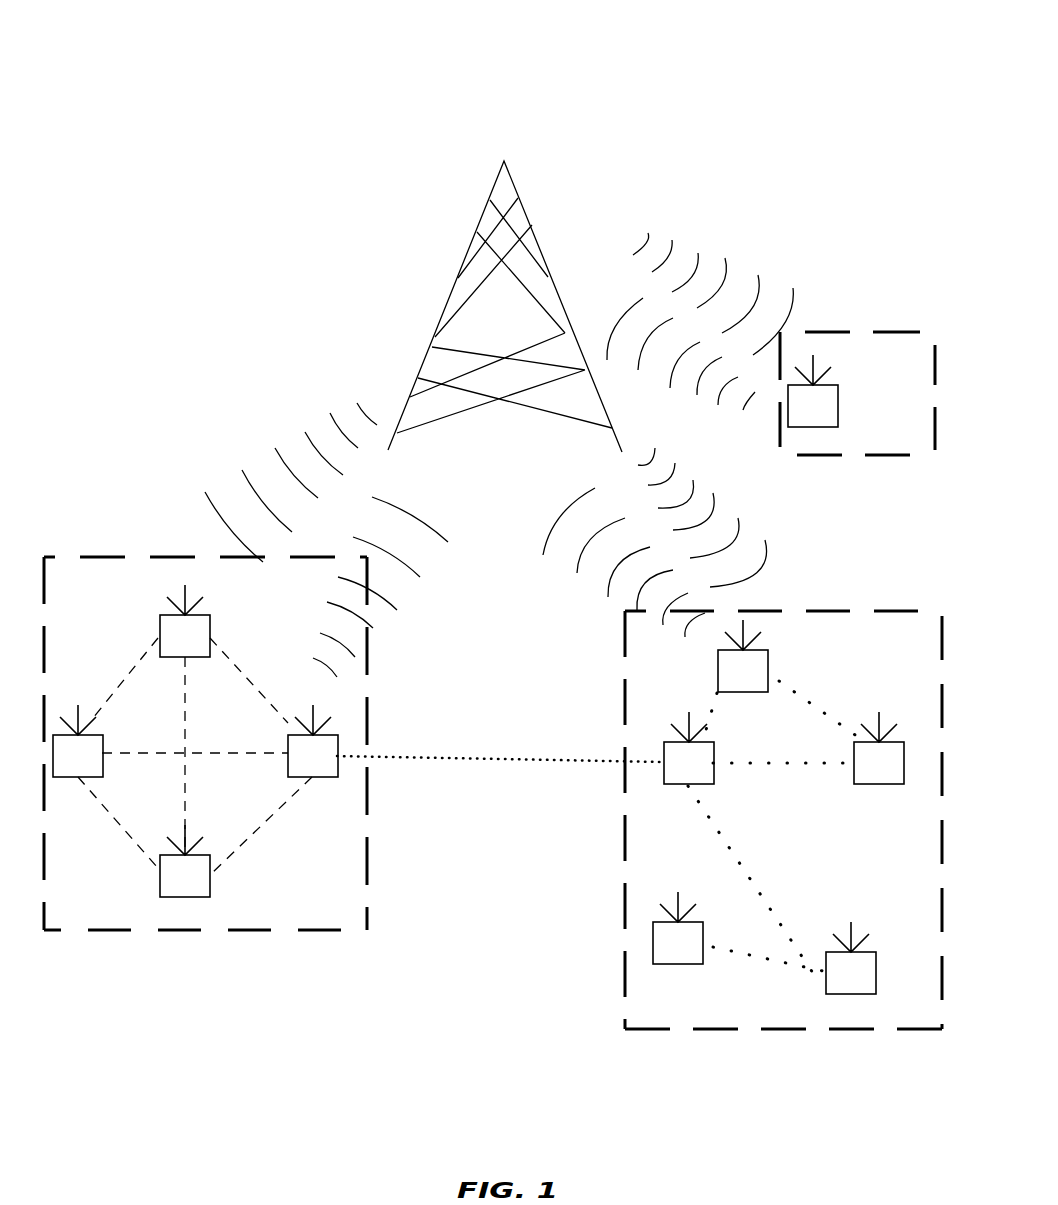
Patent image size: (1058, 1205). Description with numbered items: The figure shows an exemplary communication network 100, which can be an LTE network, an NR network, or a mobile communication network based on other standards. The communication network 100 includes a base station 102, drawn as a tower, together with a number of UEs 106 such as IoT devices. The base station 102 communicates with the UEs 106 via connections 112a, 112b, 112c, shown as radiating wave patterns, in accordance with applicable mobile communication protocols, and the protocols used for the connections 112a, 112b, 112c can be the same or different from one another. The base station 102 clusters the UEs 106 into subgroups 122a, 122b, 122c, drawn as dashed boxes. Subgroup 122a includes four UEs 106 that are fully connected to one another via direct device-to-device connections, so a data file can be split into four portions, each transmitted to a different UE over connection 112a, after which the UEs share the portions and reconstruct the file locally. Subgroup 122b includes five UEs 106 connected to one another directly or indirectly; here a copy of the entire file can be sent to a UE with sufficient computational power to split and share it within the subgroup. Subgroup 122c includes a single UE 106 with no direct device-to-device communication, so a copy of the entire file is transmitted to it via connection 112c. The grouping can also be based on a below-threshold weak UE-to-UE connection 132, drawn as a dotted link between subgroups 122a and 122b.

The communication network 100 is at (780, 52).
The base station 102 is at (530, 202).
The UE 106 is at (187, 623).
The connection 112a is at (263, 440).
The connection 112b is at (743, 540).
The connection 112c is at (740, 262).
The subgroup 122a is at (367, 827).
The subgroup 122b is at (813, 612).
The subgroup 122c is at (862, 330).
The connection 132 is at (478, 758).